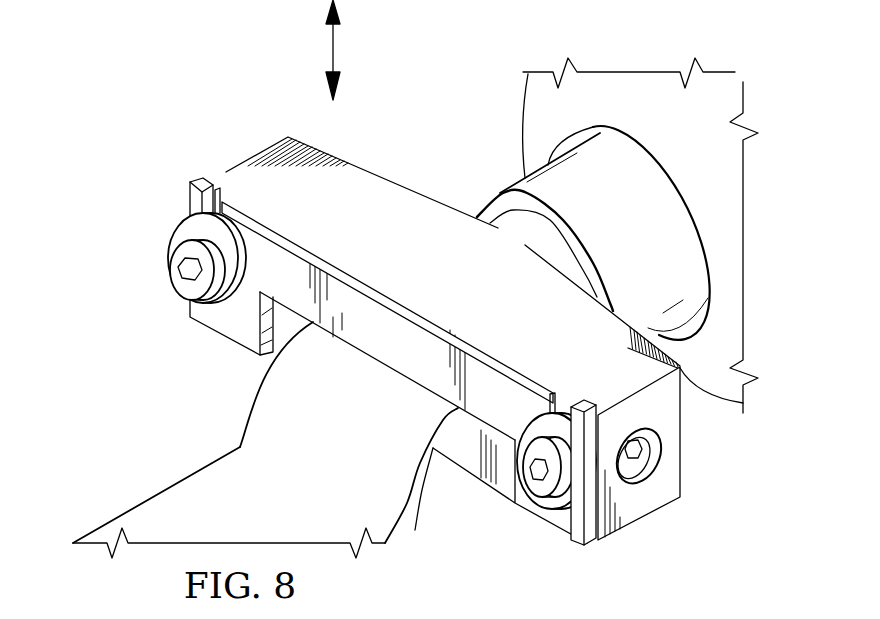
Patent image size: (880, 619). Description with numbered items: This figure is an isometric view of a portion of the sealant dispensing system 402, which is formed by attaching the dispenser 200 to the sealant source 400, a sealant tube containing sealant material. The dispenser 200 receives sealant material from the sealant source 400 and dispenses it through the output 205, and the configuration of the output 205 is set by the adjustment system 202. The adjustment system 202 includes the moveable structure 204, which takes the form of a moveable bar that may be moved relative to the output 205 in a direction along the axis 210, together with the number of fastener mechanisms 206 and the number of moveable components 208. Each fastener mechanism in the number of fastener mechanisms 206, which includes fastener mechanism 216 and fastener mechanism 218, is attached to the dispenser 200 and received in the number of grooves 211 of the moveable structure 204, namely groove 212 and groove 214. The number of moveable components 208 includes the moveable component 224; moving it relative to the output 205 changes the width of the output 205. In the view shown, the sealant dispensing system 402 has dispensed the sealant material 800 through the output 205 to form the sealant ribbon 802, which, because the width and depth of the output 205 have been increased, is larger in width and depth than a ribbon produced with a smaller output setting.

The dispenser 200 is at (273, 131).
The adjustment system 202 is at (443, 287).
The moveable structure 204 is at (385, 290).
The output 205 is at (376, 375).
The number of fastener mechanisms 206 is at (157, 285).
The number of moveable components 208 is at (647, 491).
The axis 210 is at (339, 43).
The number of grooves 211 is at (555, 381).
The groove 212 is at (221, 187).
The groove 214 is at (578, 386).
The fastener mechanism 216 is at (161, 226).
The fastener mechanism 218 is at (553, 515).
The moveable component 224 is at (650, 440).
The sealant source 400 is at (620, 80).
The sealant dispensing system 402 is at (510, 108).
The sealant material 800 is at (242, 450).
The sealant ribbon 802 is at (197, 489).